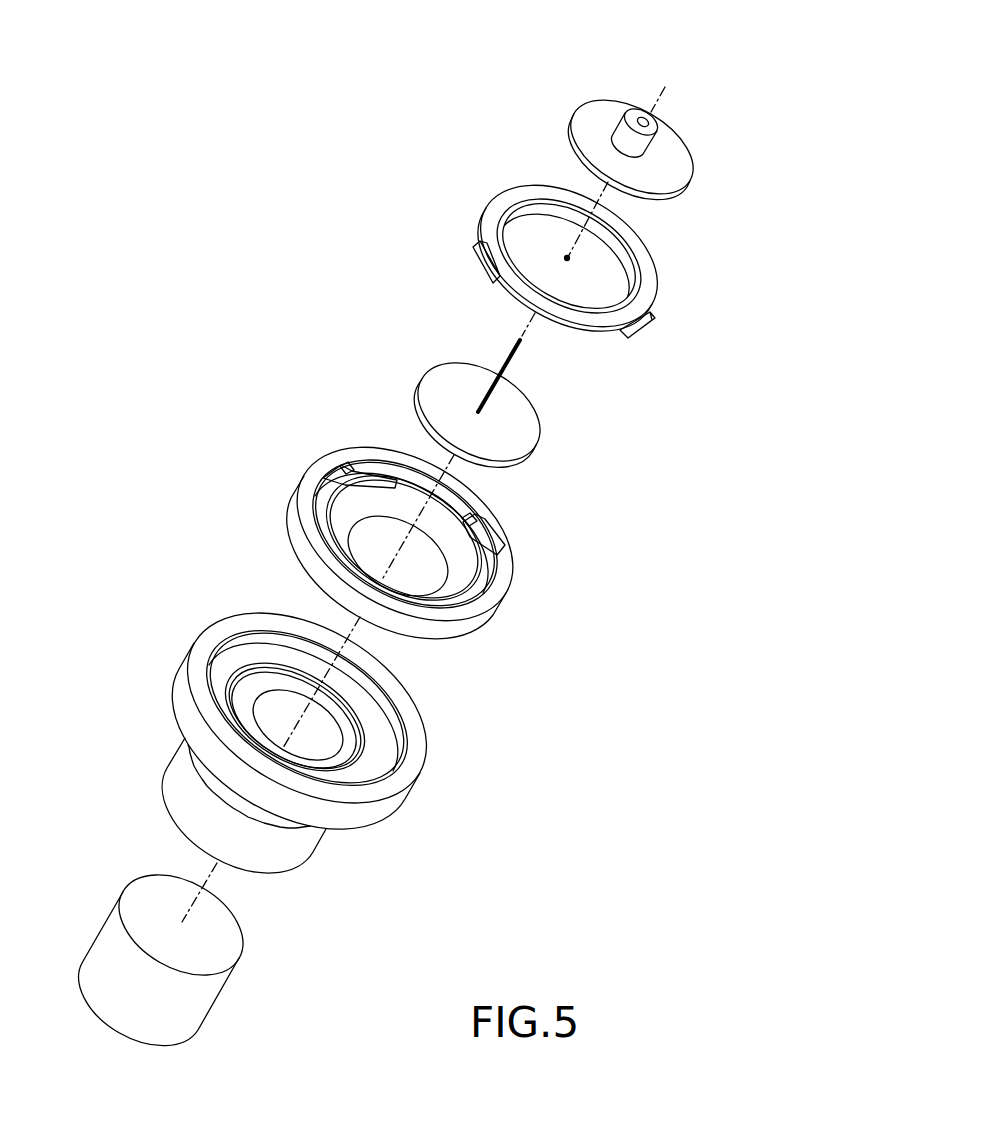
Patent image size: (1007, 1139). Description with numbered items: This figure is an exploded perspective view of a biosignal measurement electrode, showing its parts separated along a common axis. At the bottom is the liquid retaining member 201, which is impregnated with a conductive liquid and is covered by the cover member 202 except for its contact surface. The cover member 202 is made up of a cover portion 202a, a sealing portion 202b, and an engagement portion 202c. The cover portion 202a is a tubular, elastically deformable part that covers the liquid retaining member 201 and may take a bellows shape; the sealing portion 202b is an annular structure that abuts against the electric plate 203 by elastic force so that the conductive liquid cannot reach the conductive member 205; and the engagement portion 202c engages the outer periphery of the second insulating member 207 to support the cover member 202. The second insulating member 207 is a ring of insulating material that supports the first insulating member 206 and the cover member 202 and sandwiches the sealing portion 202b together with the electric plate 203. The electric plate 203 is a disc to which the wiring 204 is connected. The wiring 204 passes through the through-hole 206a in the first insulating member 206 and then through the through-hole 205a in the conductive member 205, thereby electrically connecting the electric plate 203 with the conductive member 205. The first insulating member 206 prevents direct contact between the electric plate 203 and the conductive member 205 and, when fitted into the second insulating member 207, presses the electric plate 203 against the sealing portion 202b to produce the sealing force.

The liquid retaining member 201 is at (193, 1000).
The cover member 202 is at (361, 746).
The cover portion 202a is at (305, 857).
The sealing portion 202b is at (372, 752).
The engagement portion 202c is at (370, 812).
The electric plate 203 is at (517, 443).
The wiring 204 is at (517, 363).
The conductive member 205 is at (672, 170).
The through-hole 205a is at (642, 120).
The first insulating member 206 is at (615, 283).
The through-hole 206a is at (566, 257).
The second insulating member 207 is at (453, 632).